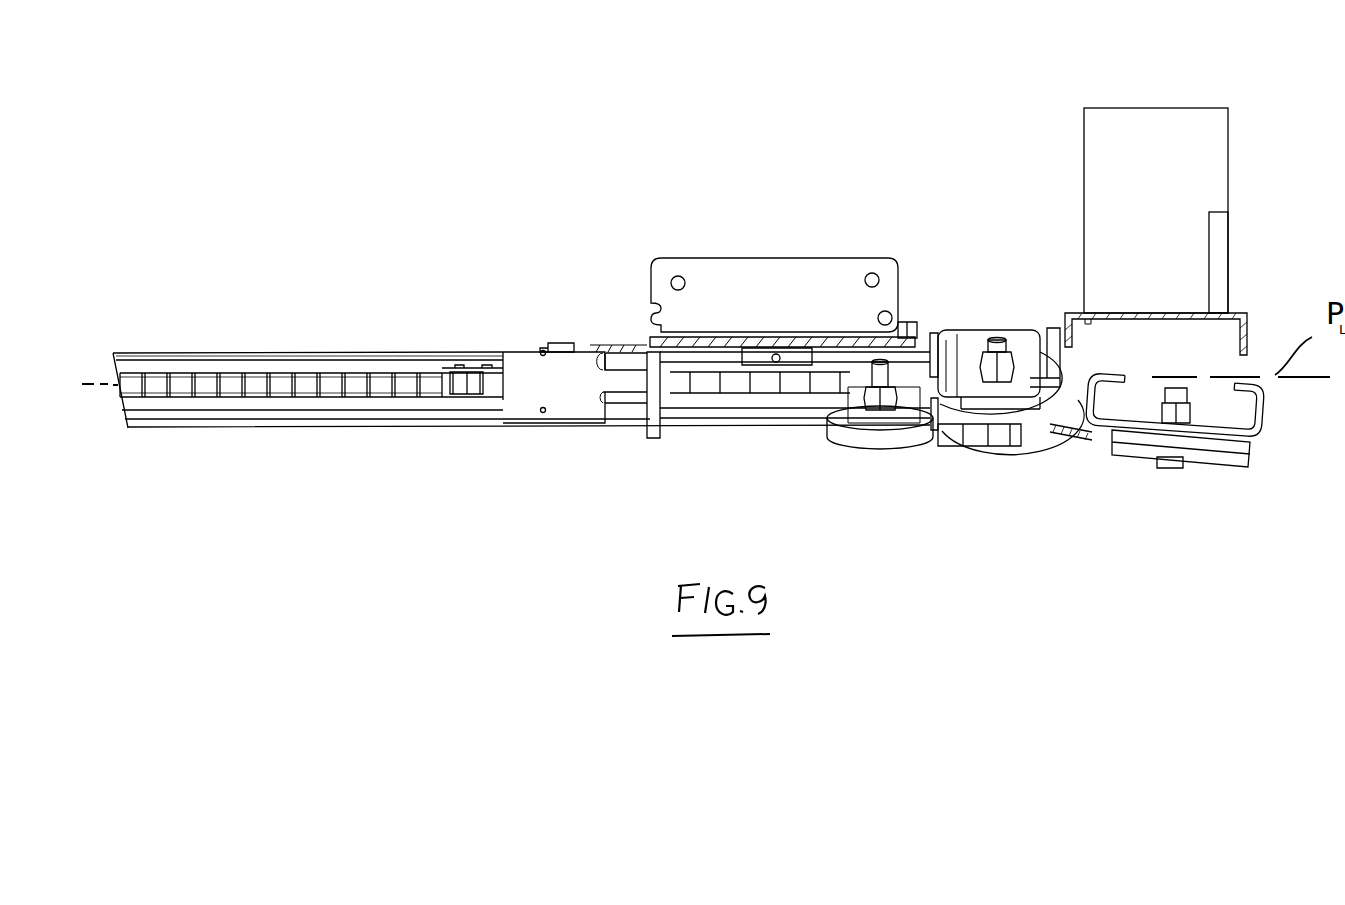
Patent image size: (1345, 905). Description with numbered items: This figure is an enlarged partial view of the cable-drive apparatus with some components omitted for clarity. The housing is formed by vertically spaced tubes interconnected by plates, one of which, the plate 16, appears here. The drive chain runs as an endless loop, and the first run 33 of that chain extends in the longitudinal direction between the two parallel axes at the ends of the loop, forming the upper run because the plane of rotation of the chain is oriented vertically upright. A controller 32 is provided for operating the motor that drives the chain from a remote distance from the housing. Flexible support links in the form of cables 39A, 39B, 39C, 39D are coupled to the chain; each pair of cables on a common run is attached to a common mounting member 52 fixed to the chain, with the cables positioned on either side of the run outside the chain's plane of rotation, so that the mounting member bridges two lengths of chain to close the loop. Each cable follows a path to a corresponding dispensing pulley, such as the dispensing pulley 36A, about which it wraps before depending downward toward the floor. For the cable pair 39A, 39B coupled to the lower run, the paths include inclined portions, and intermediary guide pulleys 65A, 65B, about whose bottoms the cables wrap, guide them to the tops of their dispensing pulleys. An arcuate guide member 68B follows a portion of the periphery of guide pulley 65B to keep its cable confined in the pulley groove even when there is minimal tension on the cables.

The plate 16 is at (697, 255).
The controller 32 is at (1145, 108).
The first run 33 is at (292, 360).
The dispensing pulley 36A is at (1223, 468).
The flexible support link 39A is at (773, 420).
The flexible support link 39B is at (392, 425).
The flexible support link 39C is at (462, 412).
The flexible support link 39D is at (367, 352).
The mounting member 52 is at (520, 360).
The intermediary guide pulley 65A is at (890, 455).
The intermediary guide pulley 65B is at (1015, 410).
The arcuate guide member 68B is at (1022, 442).